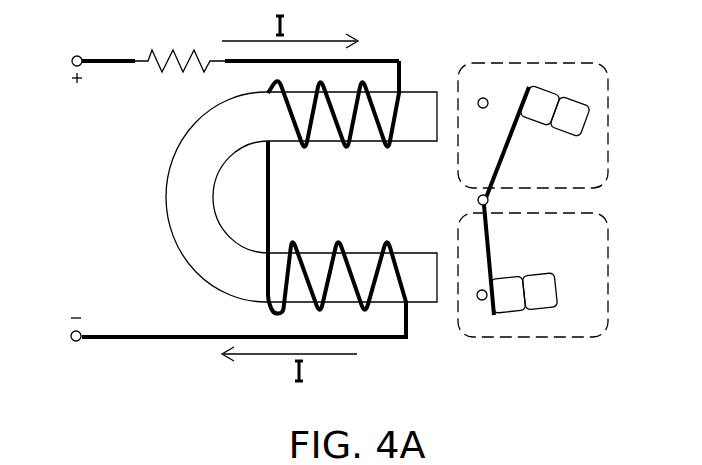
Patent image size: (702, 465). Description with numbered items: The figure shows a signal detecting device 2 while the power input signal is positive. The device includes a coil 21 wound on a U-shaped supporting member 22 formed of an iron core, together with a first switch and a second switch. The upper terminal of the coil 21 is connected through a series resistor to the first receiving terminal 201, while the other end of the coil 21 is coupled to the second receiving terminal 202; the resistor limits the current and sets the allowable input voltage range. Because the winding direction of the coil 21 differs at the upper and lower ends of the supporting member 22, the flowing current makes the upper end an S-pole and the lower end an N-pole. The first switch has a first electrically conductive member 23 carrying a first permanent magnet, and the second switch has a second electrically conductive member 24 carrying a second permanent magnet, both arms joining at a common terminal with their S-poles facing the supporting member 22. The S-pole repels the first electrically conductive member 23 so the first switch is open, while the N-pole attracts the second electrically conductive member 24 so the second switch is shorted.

The signal detecting device 2 is at (642, 374).
The first receiving terminal 201 is at (63, 50).
The second receiving terminal 202 is at (63, 351).
The coil 21 is at (352, 158).
The supporting member 22 is at (177, 219).
The first electrically conductive member 23 is at (505, 149).
The second electrically conductive member 24 is at (490, 238).